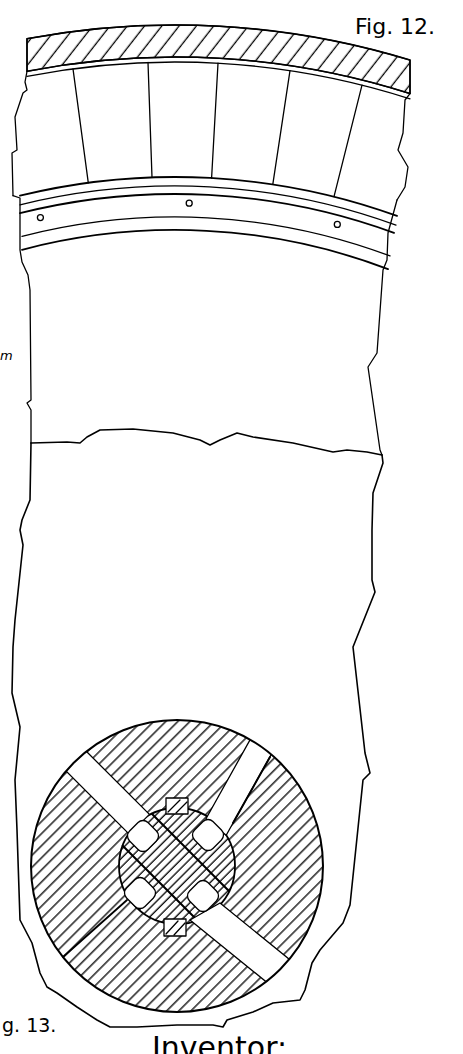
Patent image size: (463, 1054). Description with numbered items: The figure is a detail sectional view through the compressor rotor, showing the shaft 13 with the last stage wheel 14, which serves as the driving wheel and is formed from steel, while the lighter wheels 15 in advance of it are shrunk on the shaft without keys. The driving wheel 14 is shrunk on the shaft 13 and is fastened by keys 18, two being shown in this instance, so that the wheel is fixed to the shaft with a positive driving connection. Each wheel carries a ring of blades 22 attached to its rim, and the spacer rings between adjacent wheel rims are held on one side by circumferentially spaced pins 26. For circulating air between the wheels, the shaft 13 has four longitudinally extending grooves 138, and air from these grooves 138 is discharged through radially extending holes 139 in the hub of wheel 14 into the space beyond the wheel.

The shaft 13 is at (227, 867).
The last stage wheel 14 is at (362, 560).
The wheels 15 is at (363, 392).
The keys 18 is at (177, 800).
The blades 22 is at (252, 165).
The pins 26 is at (190, 207).
The grooves 138 is at (145, 826).
The holes 139 is at (97, 773).